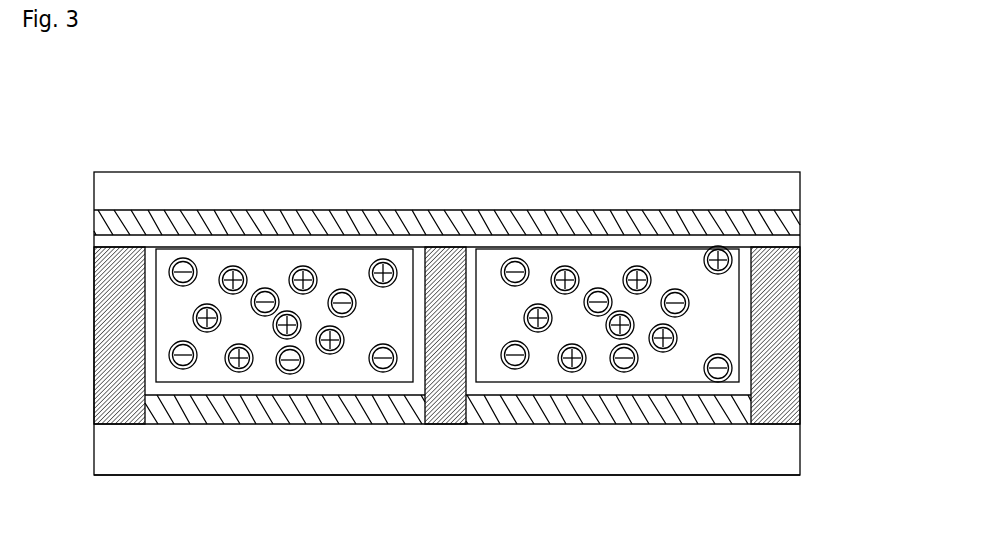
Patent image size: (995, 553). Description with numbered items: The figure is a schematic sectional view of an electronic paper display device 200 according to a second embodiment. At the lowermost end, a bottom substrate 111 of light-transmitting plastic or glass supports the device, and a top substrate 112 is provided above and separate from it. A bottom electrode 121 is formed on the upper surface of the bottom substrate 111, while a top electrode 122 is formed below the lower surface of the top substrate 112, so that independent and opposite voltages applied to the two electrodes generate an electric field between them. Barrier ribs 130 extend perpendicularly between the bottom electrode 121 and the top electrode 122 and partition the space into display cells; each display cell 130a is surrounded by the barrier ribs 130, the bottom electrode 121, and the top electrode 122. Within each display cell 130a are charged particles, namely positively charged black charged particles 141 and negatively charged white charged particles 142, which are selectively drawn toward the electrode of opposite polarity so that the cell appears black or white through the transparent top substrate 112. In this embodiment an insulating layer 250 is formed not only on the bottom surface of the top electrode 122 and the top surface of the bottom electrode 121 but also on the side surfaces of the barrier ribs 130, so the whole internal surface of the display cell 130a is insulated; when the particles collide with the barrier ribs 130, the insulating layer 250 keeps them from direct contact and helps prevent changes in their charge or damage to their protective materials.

The electronic paper display device 200 is at (90, 118).
The top substrate 112 is at (783, 192).
The top electrode 122 is at (785, 219).
The insulating layer 250 is at (785, 240).
The barrier ribs 130 is at (783, 402).
The display cell 130a is at (718, 313).
The black charged particles 141 is at (732, 258).
The white charged particles 142 is at (733, 360).
The bottom electrode 121 is at (702, 417).
The bottom substrate 111 is at (783, 450).